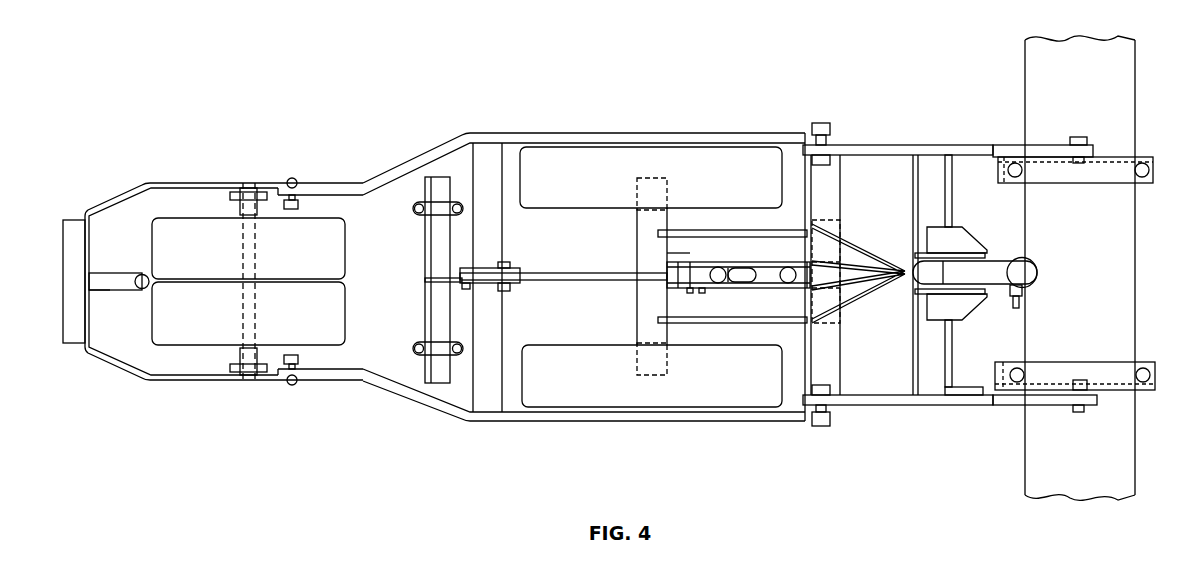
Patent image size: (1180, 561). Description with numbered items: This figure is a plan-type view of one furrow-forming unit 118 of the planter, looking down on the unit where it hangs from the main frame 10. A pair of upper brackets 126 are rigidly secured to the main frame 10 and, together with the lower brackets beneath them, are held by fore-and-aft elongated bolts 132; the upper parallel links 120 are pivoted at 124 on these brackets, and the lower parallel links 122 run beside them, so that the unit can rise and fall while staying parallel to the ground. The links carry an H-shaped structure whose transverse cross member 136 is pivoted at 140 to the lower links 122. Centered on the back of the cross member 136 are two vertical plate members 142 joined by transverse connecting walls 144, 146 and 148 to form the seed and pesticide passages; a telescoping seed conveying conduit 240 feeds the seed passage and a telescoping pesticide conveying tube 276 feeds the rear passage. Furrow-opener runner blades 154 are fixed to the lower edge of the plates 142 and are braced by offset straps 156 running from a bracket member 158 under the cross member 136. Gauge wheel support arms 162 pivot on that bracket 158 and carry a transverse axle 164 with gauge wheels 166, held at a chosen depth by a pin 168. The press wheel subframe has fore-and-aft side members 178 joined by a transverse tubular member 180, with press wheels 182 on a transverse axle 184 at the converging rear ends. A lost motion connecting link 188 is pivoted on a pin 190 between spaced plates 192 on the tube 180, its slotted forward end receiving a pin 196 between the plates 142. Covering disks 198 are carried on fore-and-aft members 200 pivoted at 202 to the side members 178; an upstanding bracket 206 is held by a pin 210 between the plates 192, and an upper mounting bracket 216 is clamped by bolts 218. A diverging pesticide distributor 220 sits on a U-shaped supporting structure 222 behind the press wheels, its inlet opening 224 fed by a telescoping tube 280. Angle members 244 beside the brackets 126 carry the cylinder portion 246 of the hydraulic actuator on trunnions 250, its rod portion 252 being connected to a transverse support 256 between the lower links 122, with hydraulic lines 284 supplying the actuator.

The main frame 10 is at (1025, 52).
The furrow-forming unit 118 is at (631, 86).
The upper parallel links 120 is at (1005, 146).
The lower parallel links 122 is at (886, 146).
The pivot 124 is at (1078, 137).
The upper brackets 126 is at (1145, 157).
The fore-and-aft elongated bolts 132 is at (1136, 174).
The transverse cross member 136 is at (840, 180).
The pivot 140 is at (821, 123).
The vertical plate members 142 is at (745, 265).
The transverse connecting wall 144 is at (790, 266).
The transverse connecting wall 146 is at (733, 283).
The transverse connecting wall 148 is at (703, 289).
The furrow-opener runner blades 154 is at (856, 298).
The offset straps 156 is at (870, 258).
The bracket member 158 is at (798, 340).
The gauge wheel support arms 162 is at (668, 230).
The transverse axle 164 is at (637, 328).
The gauge wheels 166 is at (576, 157).
The pin 168 is at (681, 237).
The fore-and-aft side members 178 is at (718, 133).
The transverse tubular member 180 is at (490, 150).
The press wheels 182 is at (348, 268).
The transverse axle 184 is at (243, 262).
The lost motion connecting link 188 is at (569, 281).
The pin 190 is at (506, 291).
The spaced plates 192 is at (512, 274).
The pin 196 is at (667, 253).
The disks 198 is at (397, 224).
The fore-and-aft members 200 is at (402, 174).
The pivot 202 is at (292, 178).
The upstanding bracket 206 is at (432, 282).
The pin 210 is at (470, 272).
The upper mounting bracket 216 is at (437, 200).
The bolts 218 is at (426, 256).
The diverging pesticide distributor 220 is at (63, 318).
The U-shaped supporting structure 222 is at (125, 366).
The inlet opening 224 is at (110, 292).
The telescoping seed conveying conduit 240 is at (790, 284).
The angle members 244 is at (990, 258).
The cylinder portion 246 is at (1030, 264).
The trunnions 250 is at (976, 300).
The rod portion 252 is at (906, 278).
The transverse support 256 is at (952, 349).
The telescoping pesticide conveying tube 276 is at (728, 283).
The telescoping tube 280 is at (128, 275).
The hydraulic lines 284 is at (1022, 296).